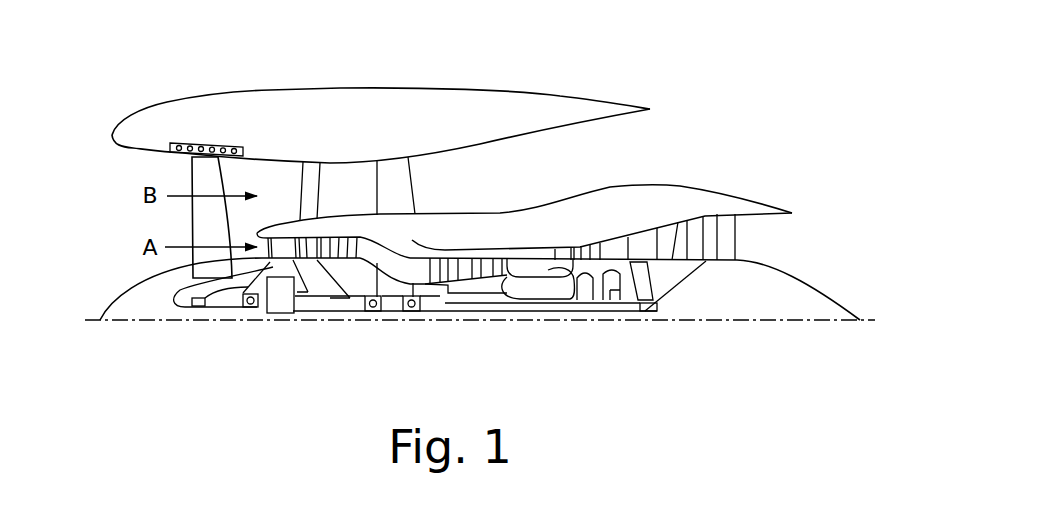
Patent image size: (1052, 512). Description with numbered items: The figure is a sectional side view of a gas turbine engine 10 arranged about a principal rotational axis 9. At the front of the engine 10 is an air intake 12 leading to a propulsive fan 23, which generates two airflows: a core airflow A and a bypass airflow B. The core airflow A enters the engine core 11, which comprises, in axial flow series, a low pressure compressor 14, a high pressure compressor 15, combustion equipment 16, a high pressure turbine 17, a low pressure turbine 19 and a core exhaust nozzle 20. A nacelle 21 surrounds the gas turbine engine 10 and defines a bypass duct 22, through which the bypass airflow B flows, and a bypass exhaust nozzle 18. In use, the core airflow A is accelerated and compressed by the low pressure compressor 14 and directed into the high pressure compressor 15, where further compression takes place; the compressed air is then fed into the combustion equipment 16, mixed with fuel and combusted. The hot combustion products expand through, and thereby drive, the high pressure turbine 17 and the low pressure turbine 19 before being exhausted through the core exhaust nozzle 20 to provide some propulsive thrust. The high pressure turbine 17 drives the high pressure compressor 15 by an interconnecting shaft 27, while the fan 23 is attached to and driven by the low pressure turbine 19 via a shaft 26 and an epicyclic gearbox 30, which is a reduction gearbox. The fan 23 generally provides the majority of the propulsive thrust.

The principal rotational axis 9 is at (760, 322).
The gas turbine engine 10 is at (168, 106).
The core 11 is at (547, 234).
The air intake 12 is at (127, 170).
The low pressure compressor 14 is at (341, 245).
The high pressure compressor 15 is at (470, 263).
The combustion equipment 16 is at (537, 268).
The high pressure turbine 17 is at (593, 245).
The bypass exhaust nozzle 18 is at (743, 104).
The low pressure turbine 19 is at (713, 250).
The core exhaust nozzle 20 is at (793, 248).
The nacelle 21 is at (393, 103).
The bypass duct 22 is at (621, 148).
The propulsive fan 23 is at (198, 233).
The shaft 26 is at (436, 312).
The interconnecting shaft 27 is at (497, 312).
The epicyclic gearbox 30 is at (288, 300).